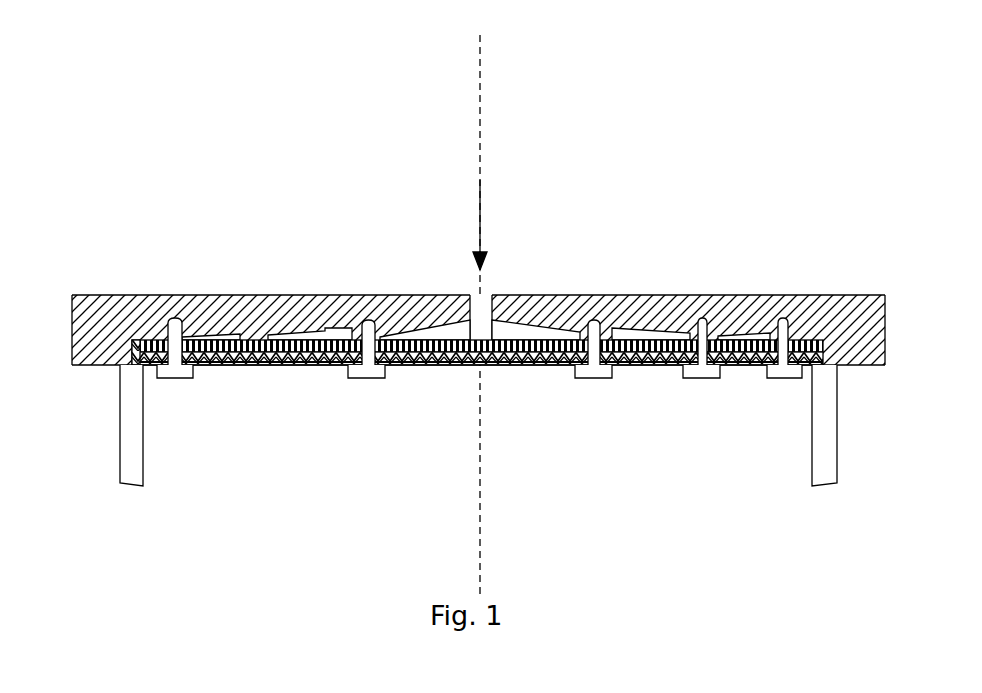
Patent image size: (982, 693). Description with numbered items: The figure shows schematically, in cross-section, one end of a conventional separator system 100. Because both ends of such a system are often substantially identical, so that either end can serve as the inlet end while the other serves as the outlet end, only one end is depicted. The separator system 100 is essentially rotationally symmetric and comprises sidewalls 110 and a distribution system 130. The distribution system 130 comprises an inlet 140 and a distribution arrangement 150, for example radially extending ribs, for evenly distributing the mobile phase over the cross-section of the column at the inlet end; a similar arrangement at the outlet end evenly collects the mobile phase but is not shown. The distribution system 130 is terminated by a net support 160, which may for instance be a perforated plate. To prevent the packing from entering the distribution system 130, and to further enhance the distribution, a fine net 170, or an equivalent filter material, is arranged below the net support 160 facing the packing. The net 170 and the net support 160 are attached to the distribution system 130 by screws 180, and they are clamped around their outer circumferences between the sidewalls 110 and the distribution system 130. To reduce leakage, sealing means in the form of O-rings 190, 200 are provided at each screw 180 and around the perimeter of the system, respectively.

The separator system 100 is at (128, 86).
The sidewalls 110 is at (128, 437).
The distribution system 130 is at (250, 191).
The inlet 140 is at (497, 225).
The distribution arrangement 150 is at (302, 367).
The net support 160 is at (548, 365).
The net 170 is at (445, 368).
The screws 180 is at (790, 378).
The O-rings 190 is at (205, 368).
The O-ring 200 is at (145, 367).